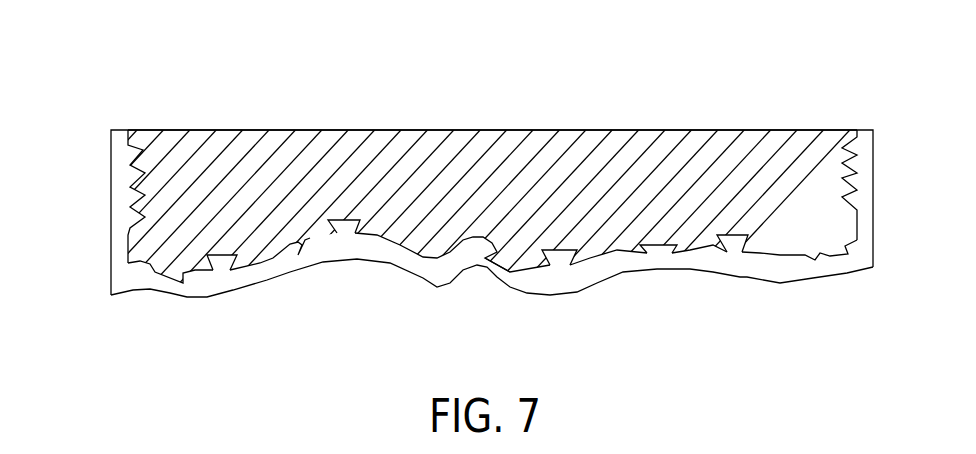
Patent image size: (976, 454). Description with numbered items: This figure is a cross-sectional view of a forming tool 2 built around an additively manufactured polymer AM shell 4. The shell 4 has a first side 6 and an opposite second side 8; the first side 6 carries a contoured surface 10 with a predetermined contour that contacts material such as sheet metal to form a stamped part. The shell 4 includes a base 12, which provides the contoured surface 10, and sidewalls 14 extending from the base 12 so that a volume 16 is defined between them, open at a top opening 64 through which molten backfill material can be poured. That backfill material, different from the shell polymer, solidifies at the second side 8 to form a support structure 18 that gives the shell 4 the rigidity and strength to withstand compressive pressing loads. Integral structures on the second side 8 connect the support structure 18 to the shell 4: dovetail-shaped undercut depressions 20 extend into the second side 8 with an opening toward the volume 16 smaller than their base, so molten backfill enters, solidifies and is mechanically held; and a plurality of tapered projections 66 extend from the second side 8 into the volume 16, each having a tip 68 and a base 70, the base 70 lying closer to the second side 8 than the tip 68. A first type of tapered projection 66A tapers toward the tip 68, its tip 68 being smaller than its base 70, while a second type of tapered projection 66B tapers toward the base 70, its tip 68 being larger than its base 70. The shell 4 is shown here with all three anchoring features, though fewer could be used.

The forming tool 2 is at (74, 138).
The AM shell 4 is at (216, 279).
The first side 6 is at (277, 288).
The second side 8 is at (597, 252).
The contoured surface 10 is at (492, 293).
The base 12 is at (413, 265).
The sidewalls 14 is at (118, 252).
The volume 16 is at (472, 163).
The support structure 18 is at (328, 158).
The undercut depressions 20 is at (272, 262).
The top opening 64 is at (400, 126).
The tapered projections 66 is at (488, 200).
The first type of tapered projection 66A is at (137, 146).
The second type of tapered projection 66B is at (580, 262).
The tip 68 is at (152, 150).
The base 70 is at (126, 152).